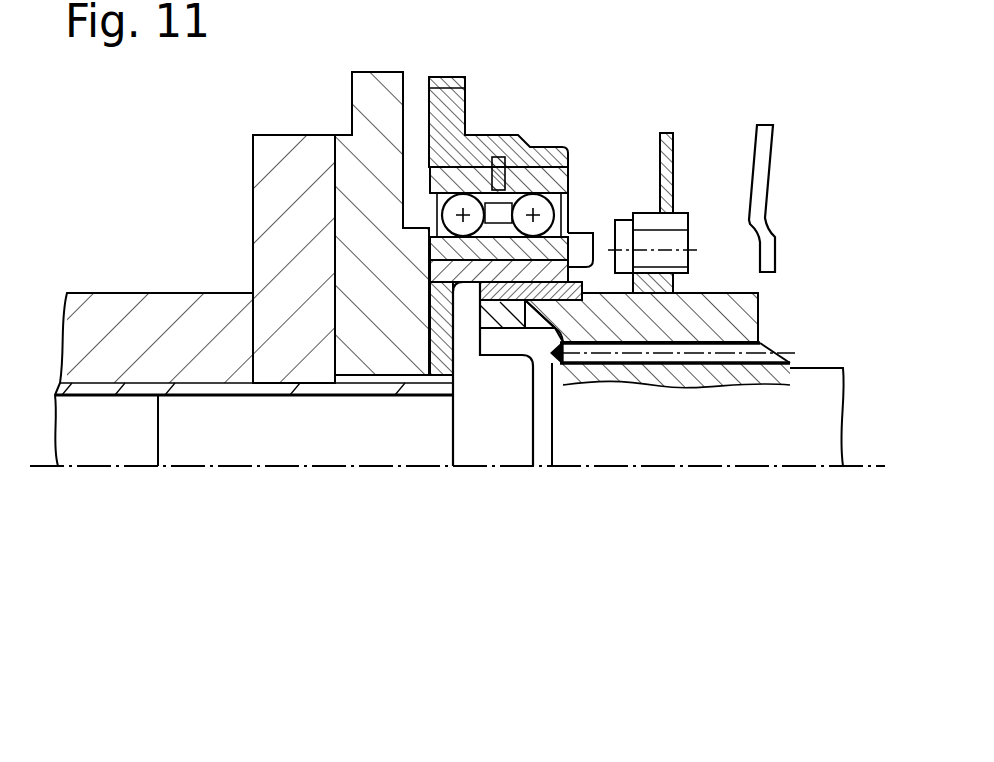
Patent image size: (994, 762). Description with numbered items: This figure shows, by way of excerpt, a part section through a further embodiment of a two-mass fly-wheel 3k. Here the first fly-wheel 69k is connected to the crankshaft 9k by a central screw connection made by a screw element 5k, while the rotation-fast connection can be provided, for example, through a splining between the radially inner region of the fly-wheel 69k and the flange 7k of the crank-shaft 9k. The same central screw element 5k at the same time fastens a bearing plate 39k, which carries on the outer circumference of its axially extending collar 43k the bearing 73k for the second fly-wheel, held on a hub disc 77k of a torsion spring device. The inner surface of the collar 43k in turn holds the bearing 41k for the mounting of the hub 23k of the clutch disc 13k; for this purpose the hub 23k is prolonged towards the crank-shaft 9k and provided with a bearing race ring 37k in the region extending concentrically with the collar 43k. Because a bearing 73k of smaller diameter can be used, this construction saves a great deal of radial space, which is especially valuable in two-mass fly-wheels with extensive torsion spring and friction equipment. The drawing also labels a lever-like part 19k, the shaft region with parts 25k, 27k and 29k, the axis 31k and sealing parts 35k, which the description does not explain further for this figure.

The two-mass fly-wheel 3k is at (410, 62).
The screw element 5k is at (483, 440).
The flange 7k is at (283, 187).
The crankshaft 9k is at (157, 330).
The clutch disc 13k is at (695, 148).
The lever spring 19k is at (762, 188).
The hub 23k is at (615, 315).
The plate 25k is at (758, 343).
The shaft shoulder 27k is at (755, 352).
The shaft 29k is at (813, 437).
The axis of rotation 31k is at (654, 468).
The seal ring 35k is at (500, 300).
The bearing race ring 37k is at (525, 300).
The bearing plate 39k is at (430, 376).
The bearing 41k is at (598, 293).
The collar 43k is at (574, 258).
The first fly-wheel 69k is at (368, 113).
The bearing 73k is at (410, 251).
The hub disc 77k is at (450, 115).